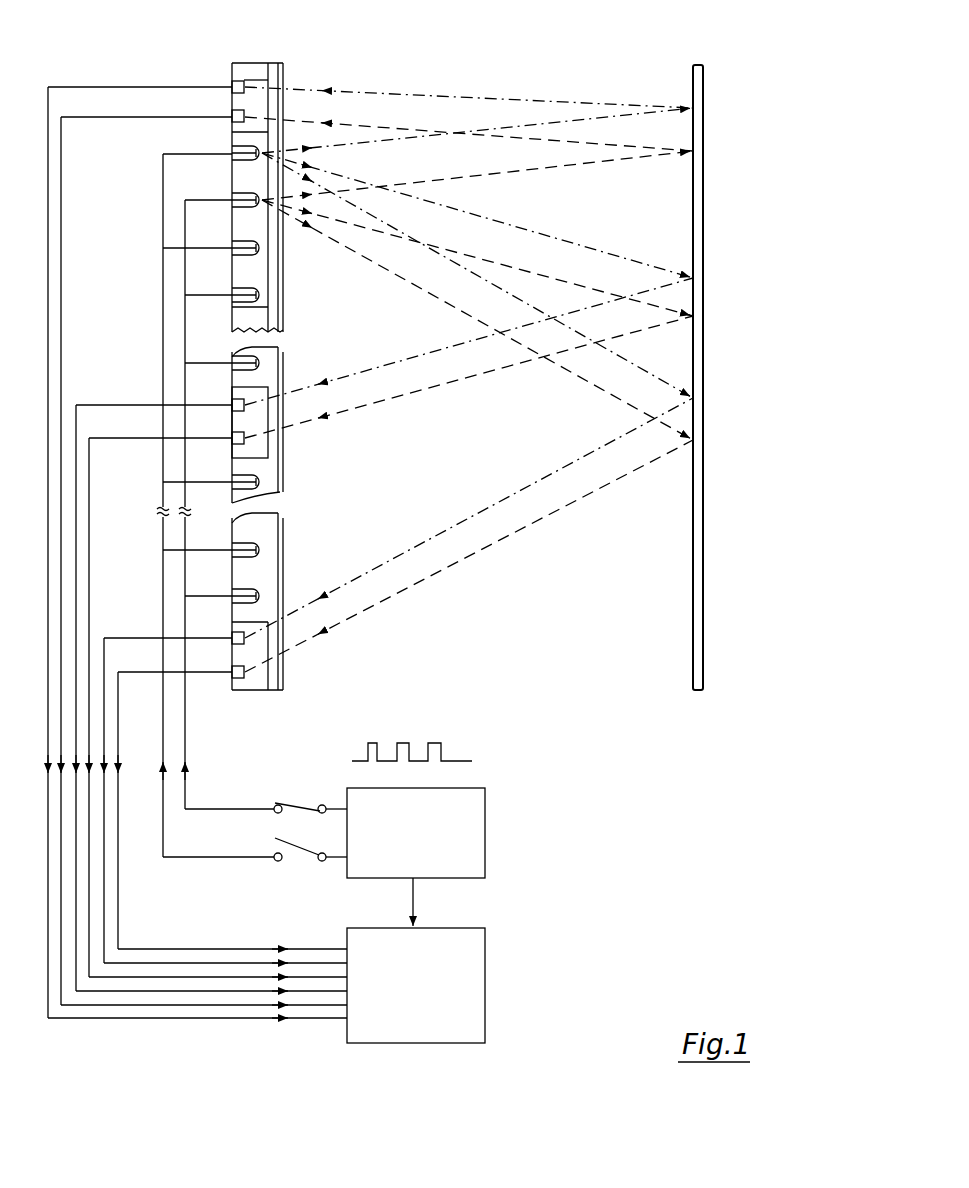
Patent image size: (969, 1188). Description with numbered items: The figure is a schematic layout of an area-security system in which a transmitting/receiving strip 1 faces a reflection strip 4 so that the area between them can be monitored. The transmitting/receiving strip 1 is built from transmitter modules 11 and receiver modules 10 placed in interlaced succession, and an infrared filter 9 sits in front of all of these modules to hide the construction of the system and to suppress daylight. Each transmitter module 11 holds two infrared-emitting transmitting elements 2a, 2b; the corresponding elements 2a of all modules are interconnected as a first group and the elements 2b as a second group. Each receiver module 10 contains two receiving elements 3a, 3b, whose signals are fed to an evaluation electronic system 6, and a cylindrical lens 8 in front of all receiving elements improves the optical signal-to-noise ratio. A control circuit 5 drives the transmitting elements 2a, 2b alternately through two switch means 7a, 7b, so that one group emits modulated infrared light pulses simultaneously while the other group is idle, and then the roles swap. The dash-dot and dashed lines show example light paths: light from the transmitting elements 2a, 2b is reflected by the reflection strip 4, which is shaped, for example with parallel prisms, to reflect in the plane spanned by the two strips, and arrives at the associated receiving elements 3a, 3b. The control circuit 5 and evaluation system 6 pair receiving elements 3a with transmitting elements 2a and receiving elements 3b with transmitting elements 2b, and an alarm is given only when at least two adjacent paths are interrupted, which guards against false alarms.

The transmitting/receiving strip 1 is at (265, 532).
The transmitting element of first group 2a is at (232, 152).
The transmitting element of second group 2b is at (232, 197).
The receiving element 3a is at (232, 80).
The receiving element 3b is at (235, 113).
The reflection strip 4 is at (703, 127).
The control circuit 5 is at (428, 855).
The evaluation electronic system 6 is at (428, 994).
The switch means 7a is at (301, 869).
The switch means 7b is at (310, 792).
The cylindrical lens 8 is at (271, 691).
The infrared filter 9 is at (283, 683).
The receiver module 10 is at (257, 72).
The transmitter module 11 is at (268, 263).